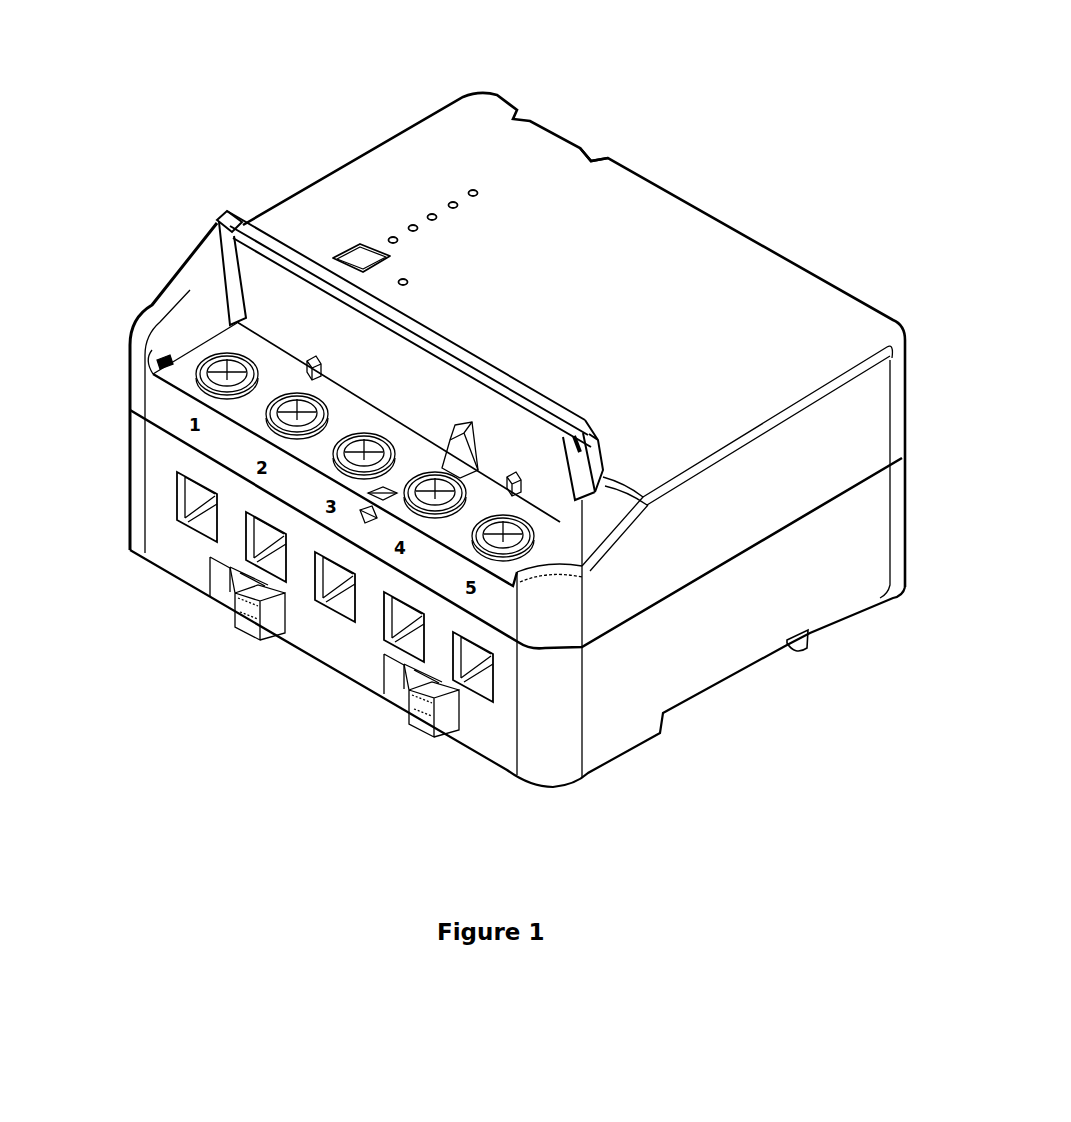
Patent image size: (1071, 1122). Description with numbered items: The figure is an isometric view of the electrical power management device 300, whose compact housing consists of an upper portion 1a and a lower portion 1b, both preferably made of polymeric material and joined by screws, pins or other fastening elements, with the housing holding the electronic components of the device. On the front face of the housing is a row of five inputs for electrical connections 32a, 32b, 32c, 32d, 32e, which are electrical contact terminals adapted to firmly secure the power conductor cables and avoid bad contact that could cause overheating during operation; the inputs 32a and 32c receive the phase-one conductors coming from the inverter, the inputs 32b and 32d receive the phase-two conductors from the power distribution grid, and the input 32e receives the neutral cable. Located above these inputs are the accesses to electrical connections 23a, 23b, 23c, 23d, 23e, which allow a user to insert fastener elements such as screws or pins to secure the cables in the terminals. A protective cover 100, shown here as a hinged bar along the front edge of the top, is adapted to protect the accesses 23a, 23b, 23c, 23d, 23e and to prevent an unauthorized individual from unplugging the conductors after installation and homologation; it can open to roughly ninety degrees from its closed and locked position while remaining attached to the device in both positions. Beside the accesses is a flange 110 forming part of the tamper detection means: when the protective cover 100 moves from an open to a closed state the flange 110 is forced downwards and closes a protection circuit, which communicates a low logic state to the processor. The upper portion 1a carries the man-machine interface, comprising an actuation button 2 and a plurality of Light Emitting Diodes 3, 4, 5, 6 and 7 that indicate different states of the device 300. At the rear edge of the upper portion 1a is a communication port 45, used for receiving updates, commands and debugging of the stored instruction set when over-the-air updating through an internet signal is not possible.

The electrical power management device 300 is at (86, 40).
The protective cover 100 is at (217, 225).
The upper portion 1a is at (835, 282).
The lower portion 1b is at (857, 620).
The actuation button 2 is at (340, 260).
The Light Emitting Diode 3 is at (397, 242).
The Light Emitting Diode 4 is at (410, 226).
The Light Emitting Diode 5 is at (436, 219).
The Light Emitting Diode 6 is at (450, 203).
The Light Emitting Diode 7 is at (477, 195).
The communication port 45 is at (574, 150).
The flange 110 is at (462, 428).
The access to electrical connection 23a is at (240, 368).
The access to electrical connection 23b is at (312, 405).
The access to electrical connection 23c is at (380, 445).
The access to electrical connection 23d is at (455, 487).
The access to electrical connection 23e is at (503, 522).
The input for electrical connection 32a is at (208, 557).
The input for electrical connection 32b is at (265, 586).
The input for electrical connection 32c is at (330, 612).
The input for electrical connection 32d is at (390, 660).
The input for electrical connection 32e is at (459, 727).